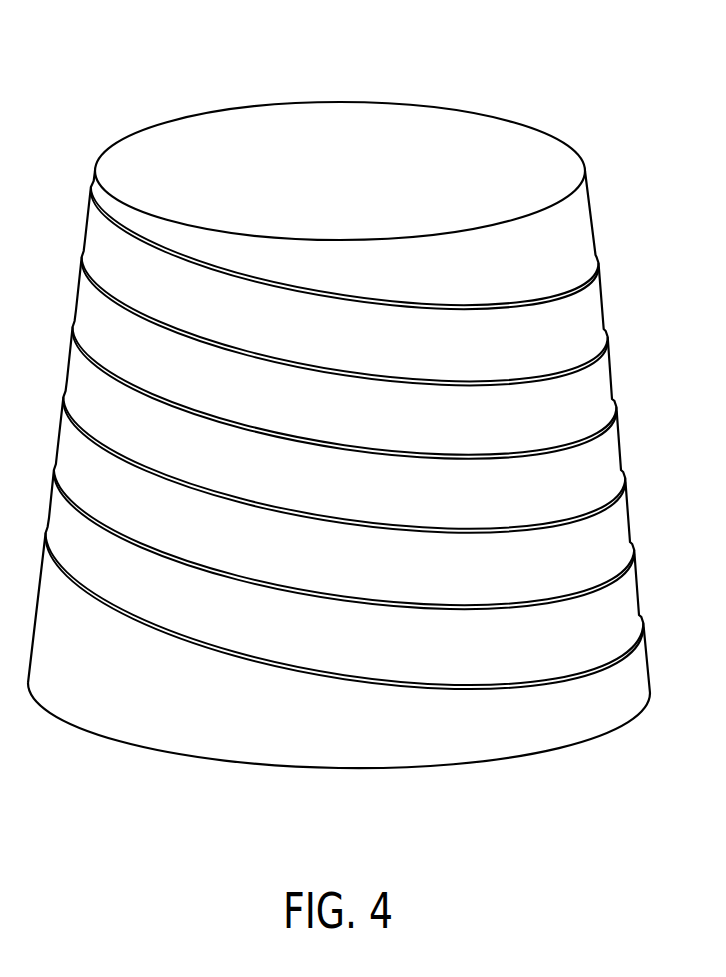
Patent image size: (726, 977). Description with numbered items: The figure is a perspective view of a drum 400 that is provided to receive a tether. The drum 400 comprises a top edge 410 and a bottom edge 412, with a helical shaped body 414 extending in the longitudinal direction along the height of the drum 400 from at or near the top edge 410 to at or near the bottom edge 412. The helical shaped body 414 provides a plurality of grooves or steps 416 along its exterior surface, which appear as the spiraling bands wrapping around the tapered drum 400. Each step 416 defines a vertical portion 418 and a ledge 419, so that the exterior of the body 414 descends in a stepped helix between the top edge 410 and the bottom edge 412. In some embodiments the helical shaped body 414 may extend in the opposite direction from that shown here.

The drum 400 is at (90, 66).
The top edge 410 is at (491, 115).
The bottom edge 412 is at (207, 764).
The helical shaped body 414 is at (597, 388).
The step 416 is at (626, 682).
The vertical portion 418 is at (612, 530).
The ledge 419 is at (628, 577).